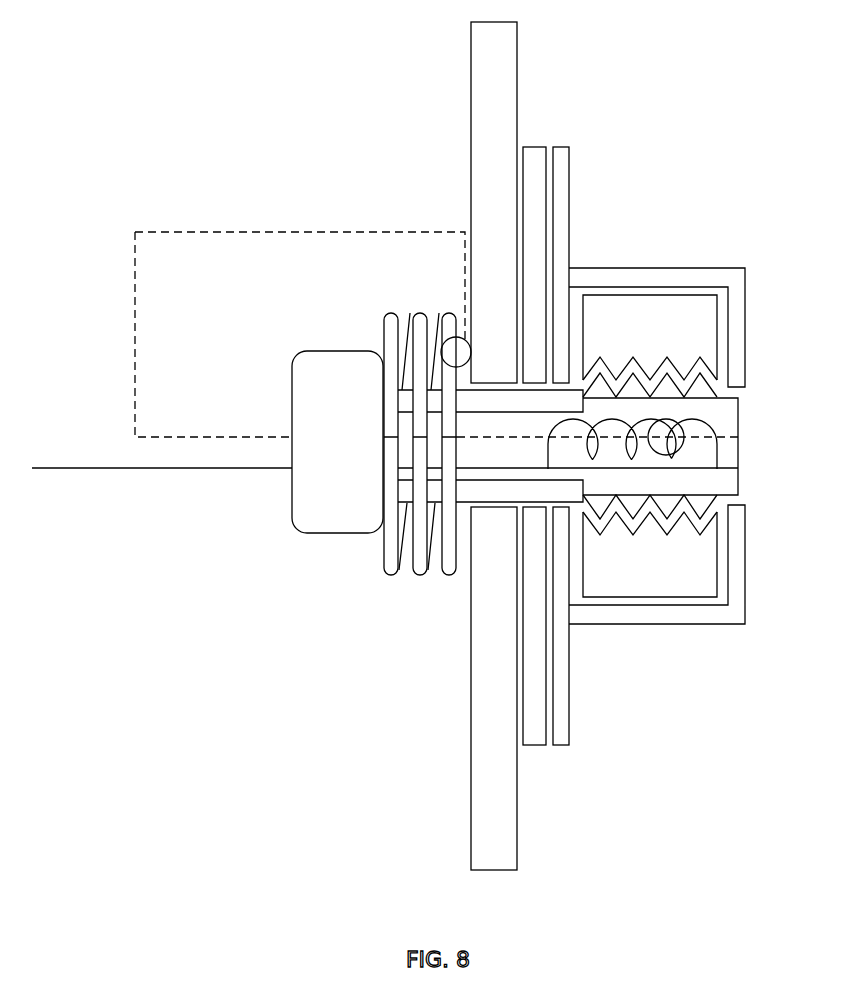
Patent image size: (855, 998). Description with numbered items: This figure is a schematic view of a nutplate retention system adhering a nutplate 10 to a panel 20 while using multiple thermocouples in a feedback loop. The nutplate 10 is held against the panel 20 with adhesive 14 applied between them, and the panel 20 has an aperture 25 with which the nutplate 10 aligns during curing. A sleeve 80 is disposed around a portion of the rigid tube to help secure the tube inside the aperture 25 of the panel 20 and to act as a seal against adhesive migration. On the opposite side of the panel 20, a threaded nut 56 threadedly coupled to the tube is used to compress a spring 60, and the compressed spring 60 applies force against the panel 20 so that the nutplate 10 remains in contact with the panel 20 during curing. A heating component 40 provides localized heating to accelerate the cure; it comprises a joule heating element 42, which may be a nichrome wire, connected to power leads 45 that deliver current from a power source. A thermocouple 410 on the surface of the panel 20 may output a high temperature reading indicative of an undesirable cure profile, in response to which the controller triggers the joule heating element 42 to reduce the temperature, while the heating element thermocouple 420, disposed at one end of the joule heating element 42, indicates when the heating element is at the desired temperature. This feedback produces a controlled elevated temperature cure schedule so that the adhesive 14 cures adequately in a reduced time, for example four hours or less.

The nutplate 10 is at (569, 174).
The adhesive 14 is at (536, 147).
The panel 20 is at (503, 43).
The aperture 25 is at (490, 505).
The heating component 40 is at (590, 417).
The joule heating element 42 is at (721, 461).
The power leads 45 is at (115, 470).
The threaded nut 56 is at (312, 393).
The spring 60 is at (385, 562).
The sleeve 80 is at (573, 397).
The thermocouple 410 is at (460, 335).
The thermocouple 420 is at (672, 424).